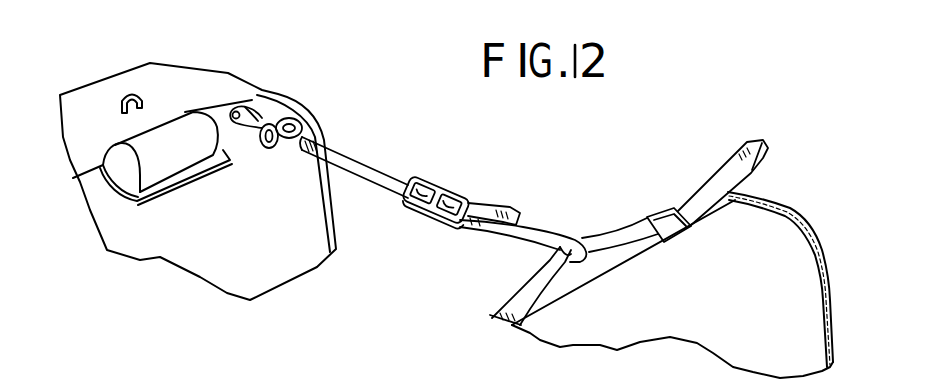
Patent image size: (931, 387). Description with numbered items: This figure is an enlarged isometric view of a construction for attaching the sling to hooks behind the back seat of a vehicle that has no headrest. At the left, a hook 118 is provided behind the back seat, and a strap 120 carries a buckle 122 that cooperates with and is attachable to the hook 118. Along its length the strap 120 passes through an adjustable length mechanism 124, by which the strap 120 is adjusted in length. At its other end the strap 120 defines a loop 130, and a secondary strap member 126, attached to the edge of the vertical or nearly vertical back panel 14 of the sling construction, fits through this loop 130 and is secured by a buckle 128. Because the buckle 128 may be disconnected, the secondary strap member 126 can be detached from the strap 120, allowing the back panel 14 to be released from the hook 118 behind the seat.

The back panel 14 is at (740, 307).
The hook 118 is at (143, 96).
The strap 120 is at (356, 164).
The buckle 122 is at (273, 105).
The adjustable length mechanism 124 is at (443, 188).
The secondary strap member 126 is at (610, 233).
The buckle 128 is at (665, 212).
The loop 130 is at (553, 224).